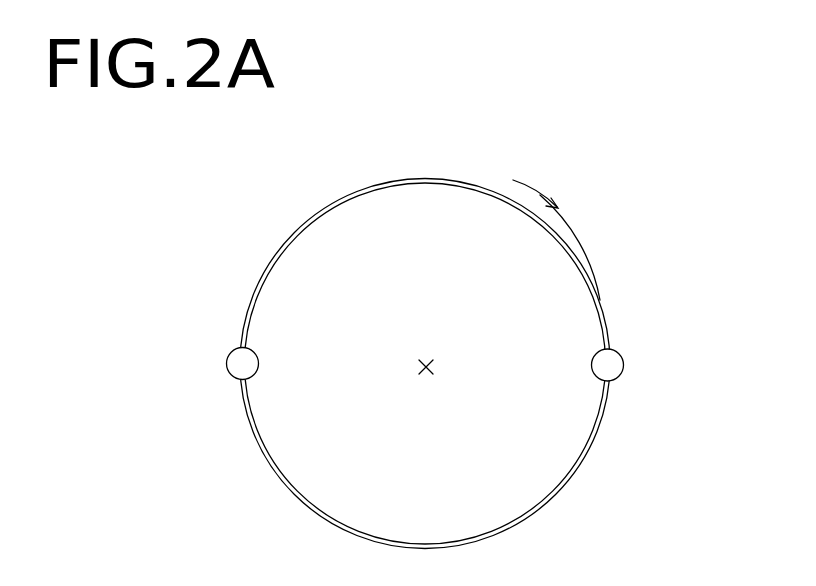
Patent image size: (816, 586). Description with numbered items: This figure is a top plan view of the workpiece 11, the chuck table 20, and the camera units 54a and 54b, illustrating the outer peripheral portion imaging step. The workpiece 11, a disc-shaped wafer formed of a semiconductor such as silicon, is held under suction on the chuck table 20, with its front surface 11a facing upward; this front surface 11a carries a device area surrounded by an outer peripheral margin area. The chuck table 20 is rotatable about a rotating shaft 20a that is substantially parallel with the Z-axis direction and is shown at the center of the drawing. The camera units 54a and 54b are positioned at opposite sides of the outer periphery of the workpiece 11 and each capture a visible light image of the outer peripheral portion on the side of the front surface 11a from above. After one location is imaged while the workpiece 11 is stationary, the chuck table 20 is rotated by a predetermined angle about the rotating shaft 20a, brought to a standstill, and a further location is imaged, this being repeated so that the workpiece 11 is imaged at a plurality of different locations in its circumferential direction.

The workpiece 11 is at (600, 307).
The front surface 11a is at (547, 267).
The chuck table 20 is at (597, 435).
The rotating shaft 20a is at (423, 375).
The camera unit 54a is at (227, 367).
The camera unit 54b is at (623, 367).